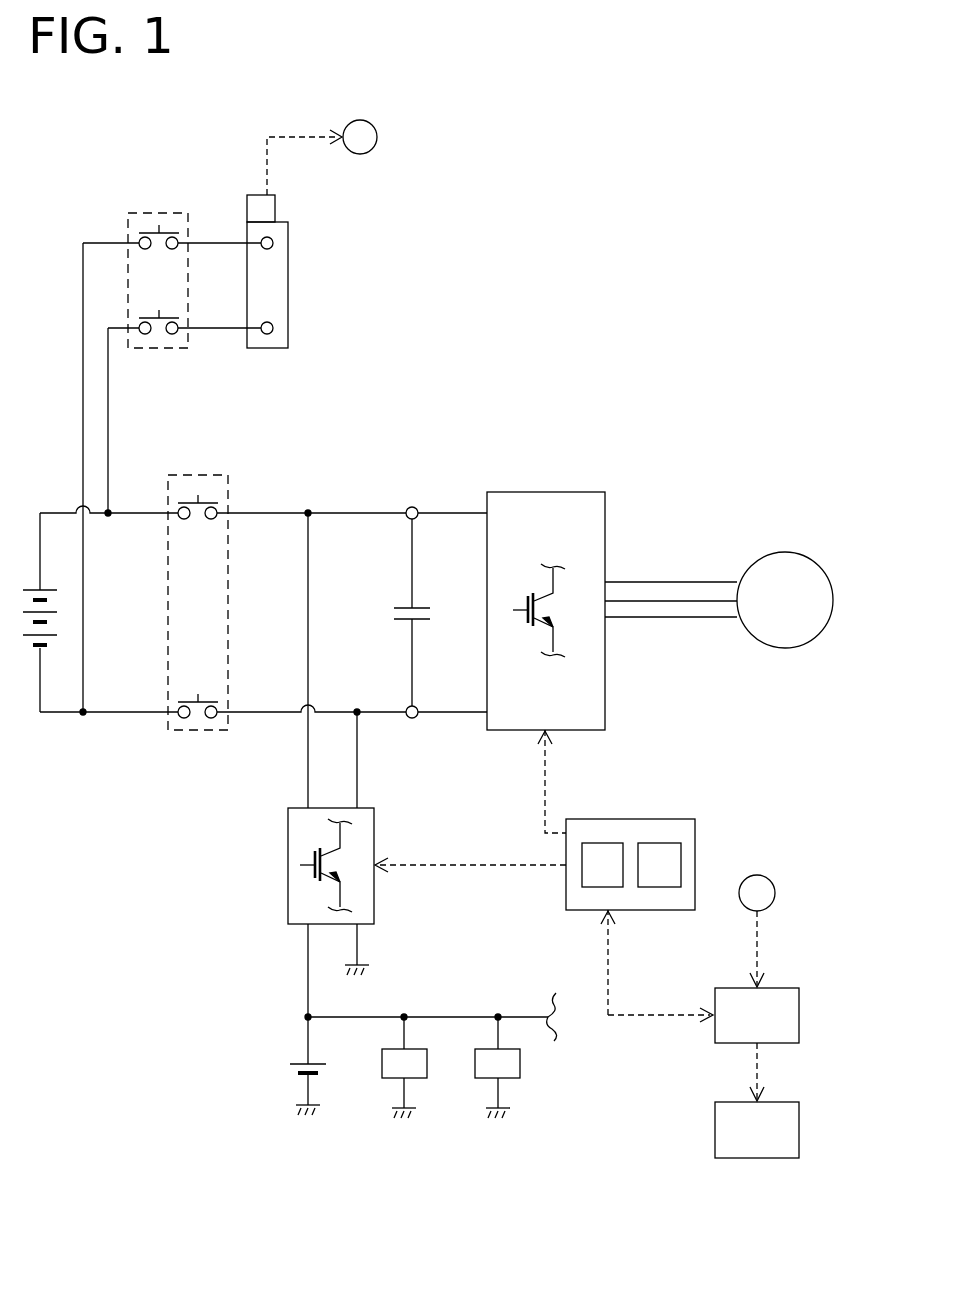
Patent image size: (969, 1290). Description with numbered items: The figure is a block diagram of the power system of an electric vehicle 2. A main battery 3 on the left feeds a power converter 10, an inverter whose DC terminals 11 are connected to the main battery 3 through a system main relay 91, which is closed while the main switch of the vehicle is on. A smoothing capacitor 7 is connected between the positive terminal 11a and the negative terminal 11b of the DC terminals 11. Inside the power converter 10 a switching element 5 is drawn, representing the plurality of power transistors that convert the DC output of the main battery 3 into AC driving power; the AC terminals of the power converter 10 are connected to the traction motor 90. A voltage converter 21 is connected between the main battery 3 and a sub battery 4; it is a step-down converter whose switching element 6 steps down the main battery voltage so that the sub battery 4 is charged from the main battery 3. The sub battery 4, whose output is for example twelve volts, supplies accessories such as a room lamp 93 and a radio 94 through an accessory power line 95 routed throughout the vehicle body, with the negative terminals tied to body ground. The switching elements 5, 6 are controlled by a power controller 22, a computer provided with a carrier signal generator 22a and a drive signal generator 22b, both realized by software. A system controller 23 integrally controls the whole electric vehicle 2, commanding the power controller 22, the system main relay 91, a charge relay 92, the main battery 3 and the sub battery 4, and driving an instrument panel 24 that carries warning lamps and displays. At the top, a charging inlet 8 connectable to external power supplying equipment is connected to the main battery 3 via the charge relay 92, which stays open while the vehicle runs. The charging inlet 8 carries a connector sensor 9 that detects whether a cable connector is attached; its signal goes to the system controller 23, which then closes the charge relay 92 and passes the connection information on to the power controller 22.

The electric vehicle 2 is at (680, 285).
The main battery 3 is at (36, 588).
The sub battery 4 is at (298, 1064).
The switching element 5 is at (512, 602).
The switching element 6 is at (306, 854).
The smoothing capacitor 7 is at (404, 604).
The charging inlet 8 is at (266, 350).
The connector sensor 9 is at (254, 195).
The power converter 10 is at (543, 586).
The DC terminals 11 is at (469, 618).
The positive terminal 11a is at (417, 505).
The negative terminal 11b is at (417, 718).
The voltage converter 21 is at (355, 891).
The power controller 22 is at (546, 872).
The carrier signal generator 22a is at (597, 842).
The drive signal generator 22b is at (660, 842).
The system controller 23 is at (786, 988).
The instrument panel 24 is at (712, 1130).
The traction motor 90 is at (781, 550).
The system main relay 91 is at (178, 733).
The charge relay 92 is at (150, 213).
The room lamp 93 is at (388, 1082).
The radio 94 is at (482, 1082).
The accessory power line 95 is at (534, 1023).